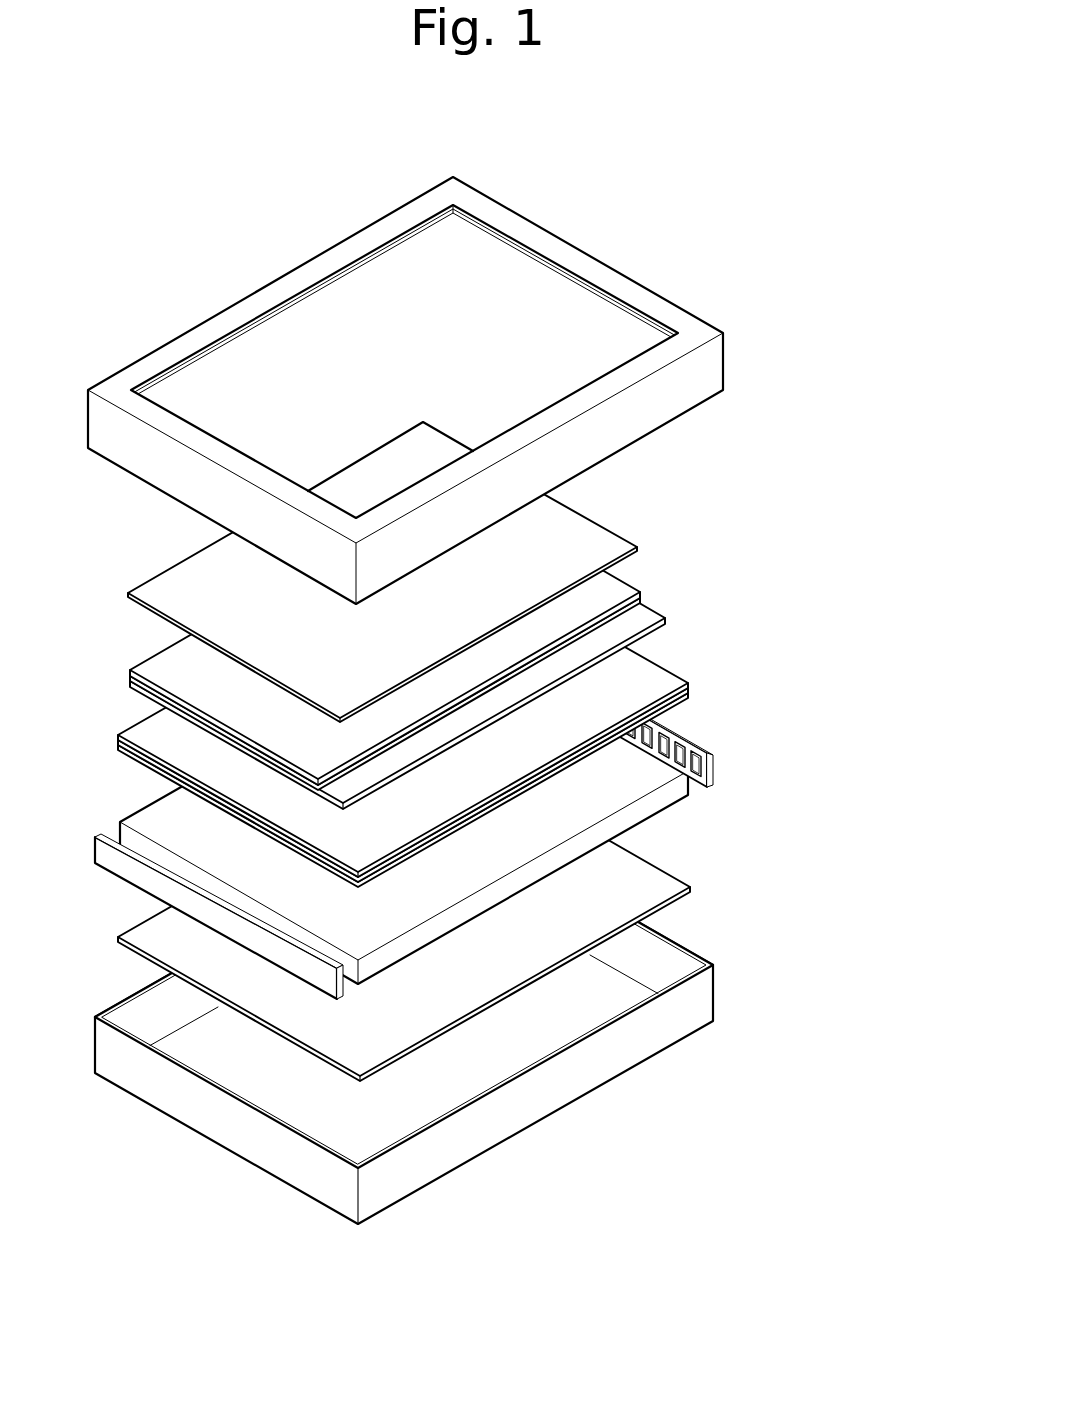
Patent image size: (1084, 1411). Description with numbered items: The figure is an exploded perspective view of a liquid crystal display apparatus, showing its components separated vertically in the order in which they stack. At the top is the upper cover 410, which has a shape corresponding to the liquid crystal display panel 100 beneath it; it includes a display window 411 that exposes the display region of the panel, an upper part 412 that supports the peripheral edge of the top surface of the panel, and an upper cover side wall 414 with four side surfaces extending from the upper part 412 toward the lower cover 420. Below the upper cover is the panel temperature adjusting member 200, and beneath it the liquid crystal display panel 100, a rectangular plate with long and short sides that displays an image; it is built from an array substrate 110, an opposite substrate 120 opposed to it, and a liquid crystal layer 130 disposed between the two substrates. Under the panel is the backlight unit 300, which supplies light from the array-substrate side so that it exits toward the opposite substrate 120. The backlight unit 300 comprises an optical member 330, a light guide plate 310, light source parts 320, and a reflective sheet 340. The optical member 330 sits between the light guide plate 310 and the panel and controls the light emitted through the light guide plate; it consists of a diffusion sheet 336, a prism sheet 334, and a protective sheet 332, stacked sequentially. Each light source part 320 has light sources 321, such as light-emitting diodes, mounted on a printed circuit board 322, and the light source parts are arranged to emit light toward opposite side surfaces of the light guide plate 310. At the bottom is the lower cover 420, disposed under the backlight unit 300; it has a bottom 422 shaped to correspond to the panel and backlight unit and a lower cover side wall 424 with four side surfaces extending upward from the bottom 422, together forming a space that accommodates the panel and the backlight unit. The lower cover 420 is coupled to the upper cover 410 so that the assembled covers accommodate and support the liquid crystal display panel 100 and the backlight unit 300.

The liquid crystal display panel 100 is at (499, 646).
The array substrate 110 is at (665, 616).
The opposite substrate 120 is at (641, 590).
The liquid crystal layer 130 is at (643, 600).
The panel temperature adjusting member 200 is at (615, 543).
The backlight unit 300 is at (489, 813).
The light guide plate 310 is at (607, 792).
The light source part 320 is at (462, 834).
The light source 321 is at (692, 749).
The printed circuit board 322 is at (707, 754).
The optical member 330 is at (493, 716).
The protective sheet 332 is at (690, 686).
The prism sheet 334 is at (690, 689).
The diffusion sheet 336 is at (690, 694).
The reflective sheet 340 is at (658, 887).
The upper cover 410 is at (458, 390).
The display window 411 is at (333, 331).
The upper part 412 is at (652, 302).
The upper cover side wall 414 is at (713, 380).
The lower cover 420 is at (470, 1041).
The bottom 422 is at (217, 1065).
The lower cover side wall 424 is at (298, 1172).